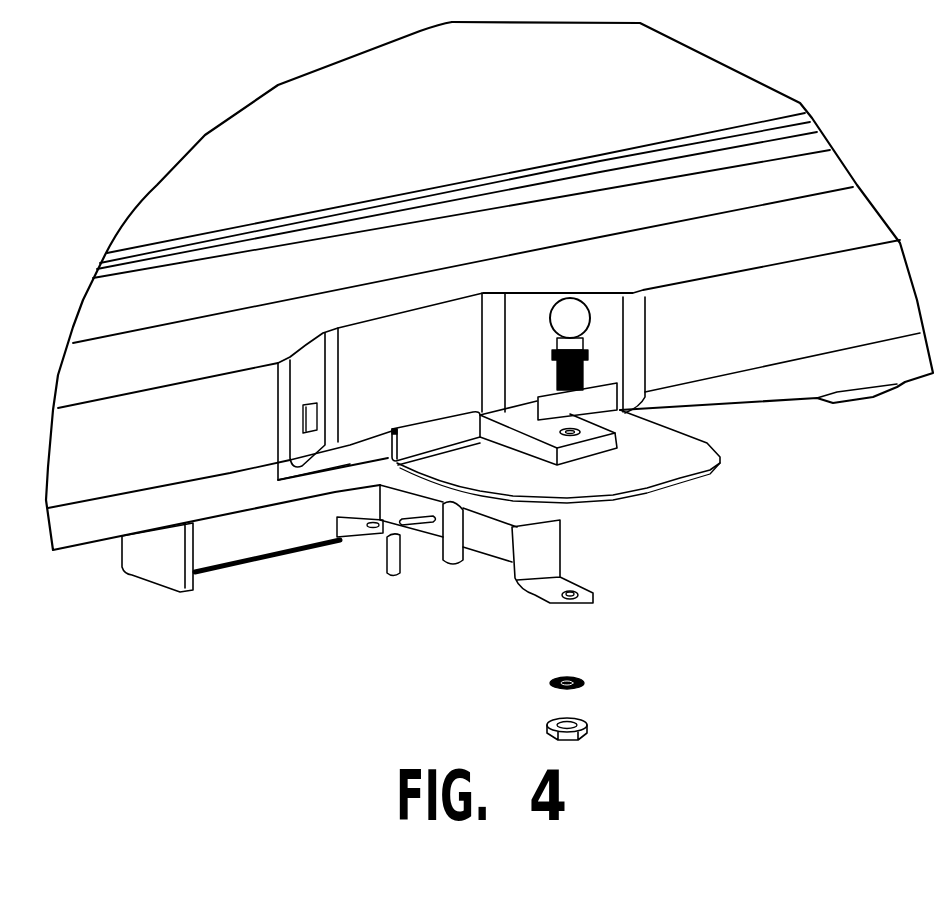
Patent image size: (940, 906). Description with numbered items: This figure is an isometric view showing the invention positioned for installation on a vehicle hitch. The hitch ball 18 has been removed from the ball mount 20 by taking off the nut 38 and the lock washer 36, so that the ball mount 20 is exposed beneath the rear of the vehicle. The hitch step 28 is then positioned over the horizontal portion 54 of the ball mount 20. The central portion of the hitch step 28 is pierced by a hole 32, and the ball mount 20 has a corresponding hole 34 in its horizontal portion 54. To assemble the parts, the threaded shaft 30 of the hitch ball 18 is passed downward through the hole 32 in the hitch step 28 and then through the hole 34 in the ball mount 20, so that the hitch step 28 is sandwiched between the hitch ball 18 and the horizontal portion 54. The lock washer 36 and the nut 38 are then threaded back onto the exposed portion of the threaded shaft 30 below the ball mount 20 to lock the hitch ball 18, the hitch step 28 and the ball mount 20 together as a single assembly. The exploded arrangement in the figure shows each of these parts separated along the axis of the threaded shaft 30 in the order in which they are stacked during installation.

The hitch ball 18 is at (572, 310).
The ball mount 20 is at (512, 572).
The hitch step 28 is at (674, 457).
The threaded shaft 30 is at (557, 385).
The hole 32 is at (577, 423).
The hole 34 is at (572, 600).
The lock washer 36 is at (553, 682).
The nut 38 is at (588, 730).
The horizontal portion 54 is at (570, 580).